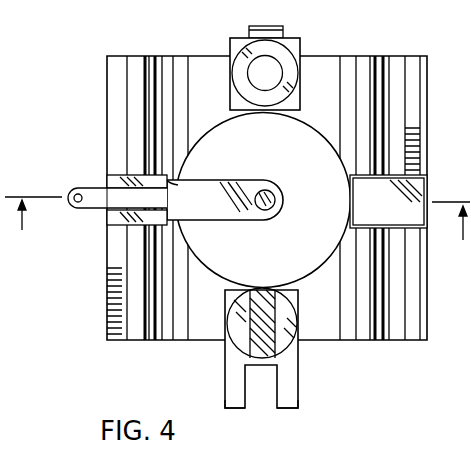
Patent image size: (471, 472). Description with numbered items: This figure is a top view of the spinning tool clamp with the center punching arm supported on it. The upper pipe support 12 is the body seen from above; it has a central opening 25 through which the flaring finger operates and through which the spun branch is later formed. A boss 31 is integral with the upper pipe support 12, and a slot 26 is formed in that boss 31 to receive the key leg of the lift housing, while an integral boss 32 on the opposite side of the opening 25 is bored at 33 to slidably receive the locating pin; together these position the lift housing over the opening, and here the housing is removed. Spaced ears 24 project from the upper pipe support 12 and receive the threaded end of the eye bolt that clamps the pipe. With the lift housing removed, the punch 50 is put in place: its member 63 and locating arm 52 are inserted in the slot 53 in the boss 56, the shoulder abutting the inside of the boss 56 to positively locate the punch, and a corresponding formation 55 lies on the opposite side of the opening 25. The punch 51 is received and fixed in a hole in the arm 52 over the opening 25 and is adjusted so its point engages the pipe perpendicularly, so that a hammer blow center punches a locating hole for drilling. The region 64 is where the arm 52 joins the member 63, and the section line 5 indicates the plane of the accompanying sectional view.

The section line 5- 5 is at (237, 229).
The upper pipe support 12 is at (428, 109).
The spaced ears 24 is at (276, 408).
The opening 25 is at (331, 264).
The slot 26 is at (270, 302).
The boss 31 is at (287, 348).
The boss 32 is at (301, 46).
The bore 33 is at (249, 78).
The punch 50 is at (80, 208).
The punch 51 is at (270, 192).
The locating arm 52 is at (217, 209).
The slot 53 is at (118, 186).
The side block 55 is at (393, 217).
The boss 56 is at (170, 222).
The member 63 is at (117, 208).
The arm joint 64 is at (176, 185).